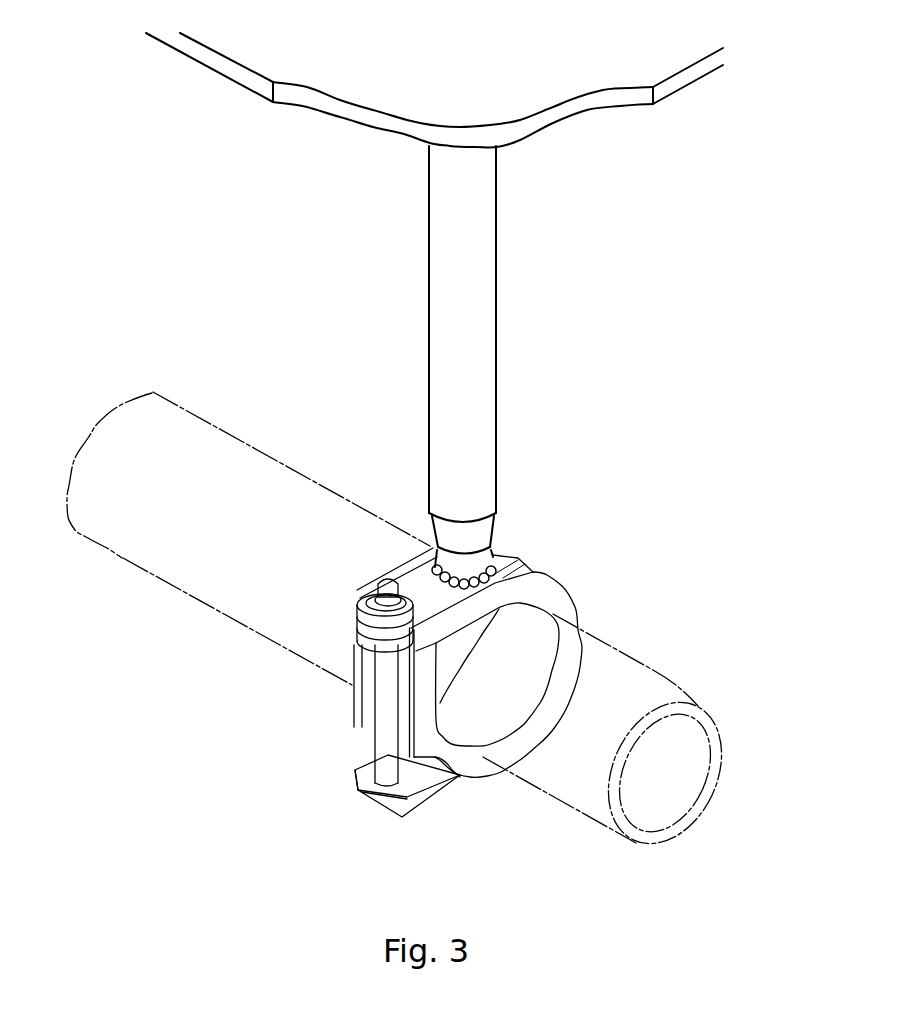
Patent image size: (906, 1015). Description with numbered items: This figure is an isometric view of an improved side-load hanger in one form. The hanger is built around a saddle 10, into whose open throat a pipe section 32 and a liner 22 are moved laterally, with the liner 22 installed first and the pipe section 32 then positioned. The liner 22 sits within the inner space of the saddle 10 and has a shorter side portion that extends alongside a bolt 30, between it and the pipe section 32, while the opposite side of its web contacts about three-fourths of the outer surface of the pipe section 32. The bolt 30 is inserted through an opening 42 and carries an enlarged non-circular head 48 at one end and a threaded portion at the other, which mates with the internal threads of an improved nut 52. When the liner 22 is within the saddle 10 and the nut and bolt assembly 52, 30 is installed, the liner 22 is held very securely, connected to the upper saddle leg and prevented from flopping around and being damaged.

The saddle 10 is at (527, 553).
The liner 22 is at (437, 758).
The bolt 30 is at (383, 717).
The pipe section 32 is at (633, 657).
The opening 42 is at (357, 789).
The enlarged non-circular head 48 is at (404, 810).
The nut 52 is at (351, 596).